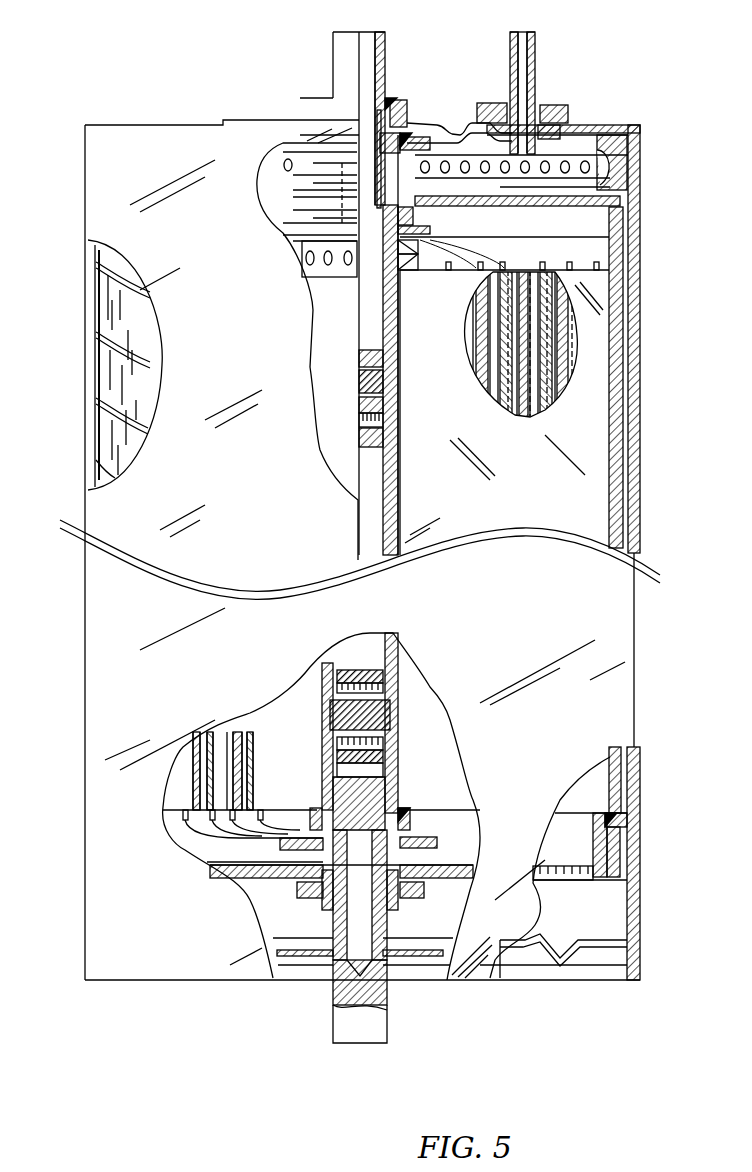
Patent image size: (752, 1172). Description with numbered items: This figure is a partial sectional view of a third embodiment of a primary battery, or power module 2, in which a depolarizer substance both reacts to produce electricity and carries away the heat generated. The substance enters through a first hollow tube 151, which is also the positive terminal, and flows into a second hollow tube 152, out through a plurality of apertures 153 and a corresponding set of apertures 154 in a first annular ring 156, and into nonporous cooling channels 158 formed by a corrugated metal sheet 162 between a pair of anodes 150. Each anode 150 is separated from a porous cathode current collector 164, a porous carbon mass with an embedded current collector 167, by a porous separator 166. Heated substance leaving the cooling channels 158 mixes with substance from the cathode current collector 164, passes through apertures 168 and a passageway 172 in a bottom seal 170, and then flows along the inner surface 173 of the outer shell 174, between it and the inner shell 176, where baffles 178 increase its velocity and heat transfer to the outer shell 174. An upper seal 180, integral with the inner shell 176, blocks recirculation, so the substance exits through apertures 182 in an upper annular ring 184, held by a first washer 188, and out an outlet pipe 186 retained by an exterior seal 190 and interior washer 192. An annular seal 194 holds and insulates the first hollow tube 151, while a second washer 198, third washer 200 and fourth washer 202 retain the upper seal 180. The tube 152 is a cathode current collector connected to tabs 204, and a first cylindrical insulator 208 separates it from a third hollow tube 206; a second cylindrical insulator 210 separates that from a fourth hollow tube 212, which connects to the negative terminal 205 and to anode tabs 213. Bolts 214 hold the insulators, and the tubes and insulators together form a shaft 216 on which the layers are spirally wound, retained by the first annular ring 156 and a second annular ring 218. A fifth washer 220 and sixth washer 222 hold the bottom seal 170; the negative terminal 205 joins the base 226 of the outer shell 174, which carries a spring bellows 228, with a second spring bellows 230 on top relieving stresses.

The power module 2 is at (72, 614).
The anode 150 is at (540, 262).
The first hollow tube 151 is at (386, 52).
The second hollow tube 152 is at (378, 300).
The apertures 153 is at (365, 278).
The apertures 154 is at (412, 286).
The first annular ring 156 is at (412, 306).
The cooling channels 158 is at (524, 416).
The corrugated metal sheet 162 is at (520, 410).
The cathode current collector 164 is at (566, 262).
The porous separator 166 is at (624, 243).
The embedded current collector 167 is at (505, 262).
The apertures 168 is at (573, 878).
The bottom seal 170 is at (550, 882).
The passageway 172 is at (614, 885).
The inner surface 173 is at (631, 776).
The outer shell 174 is at (632, 830).
The inner shell 176 is at (616, 802).
The baffles 178 is at (641, 291).
The upper seal 180 is at (603, 192).
The apertures 182 is at (641, 137).
The upper annular ring 184 is at (580, 160).
The outlet pipe 186 is at (536, 52).
The first washer 188 is at (412, 132).
The exterior seal 190 is at (552, 104).
The interior washer 192 is at (552, 140).
The annular seal 194 is at (392, 100).
The second washer 198 is at (455, 128).
The third washer 200 is at (478, 262).
The fourth washer 202 is at (430, 212).
The tabs 204 is at (428, 312).
The negative terminal 205 is at (388, 1010).
The third hollow tube 206 is at (398, 450).
The first cylindrical insulator 208 is at (400, 383).
The second cylindrical insulator 210 is at (399, 716).
The fourth hollow tube 212 is at (390, 780).
The tabs 213 is at (258, 814).
The bolts 214 is at (397, 744).
The shaft 216 is at (418, 517).
The second annular ring 218 is at (404, 820).
The fifth washer 220 is at (428, 848).
The sixth washer 222 is at (405, 893).
The base 226 is at (432, 965).
The spring bellows 228 is at (556, 953).
The second spring bellows 230 is at (468, 110).